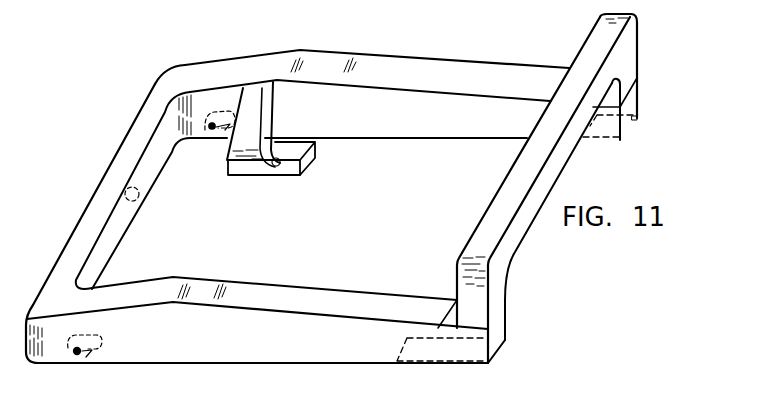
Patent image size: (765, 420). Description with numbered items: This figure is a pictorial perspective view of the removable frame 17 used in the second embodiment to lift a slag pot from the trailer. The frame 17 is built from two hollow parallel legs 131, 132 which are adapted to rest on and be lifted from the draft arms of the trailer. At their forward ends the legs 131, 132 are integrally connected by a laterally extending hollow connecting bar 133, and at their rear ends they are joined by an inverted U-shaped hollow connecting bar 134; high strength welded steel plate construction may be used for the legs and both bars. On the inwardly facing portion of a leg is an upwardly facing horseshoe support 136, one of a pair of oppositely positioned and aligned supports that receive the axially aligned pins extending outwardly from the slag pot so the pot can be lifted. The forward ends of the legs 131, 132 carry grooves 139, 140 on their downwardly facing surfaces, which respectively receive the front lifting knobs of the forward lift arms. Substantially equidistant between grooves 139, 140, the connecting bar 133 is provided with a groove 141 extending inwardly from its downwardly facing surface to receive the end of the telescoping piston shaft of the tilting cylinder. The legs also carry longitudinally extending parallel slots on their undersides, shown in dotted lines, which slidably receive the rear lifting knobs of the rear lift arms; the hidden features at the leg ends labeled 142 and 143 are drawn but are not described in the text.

The removable frame 17 is at (401, 150).
The hollow parallel leg 131 is at (312, 357).
The hollow parallel leg 132 is at (428, 58).
The laterally extending hollow connecting bar 133 is at (108, 170).
The inverted U-shaped hollow connecting bar 134 is at (508, 174).
The horseshoe support 136 is at (275, 166).
The groove 139 is at (83, 358).
The groove 140 is at (184, 152).
The groove 141 is at (142, 199).
The clip 142 is at (494, 350).
The clip 143 is at (622, 122).